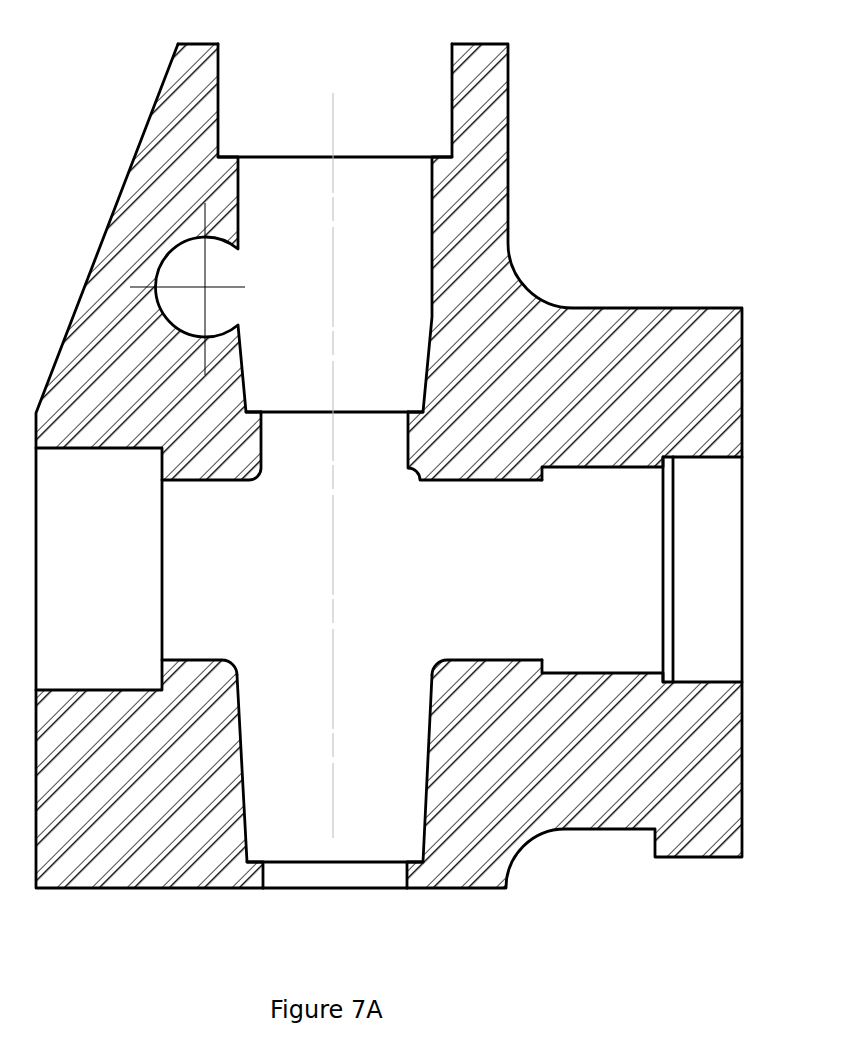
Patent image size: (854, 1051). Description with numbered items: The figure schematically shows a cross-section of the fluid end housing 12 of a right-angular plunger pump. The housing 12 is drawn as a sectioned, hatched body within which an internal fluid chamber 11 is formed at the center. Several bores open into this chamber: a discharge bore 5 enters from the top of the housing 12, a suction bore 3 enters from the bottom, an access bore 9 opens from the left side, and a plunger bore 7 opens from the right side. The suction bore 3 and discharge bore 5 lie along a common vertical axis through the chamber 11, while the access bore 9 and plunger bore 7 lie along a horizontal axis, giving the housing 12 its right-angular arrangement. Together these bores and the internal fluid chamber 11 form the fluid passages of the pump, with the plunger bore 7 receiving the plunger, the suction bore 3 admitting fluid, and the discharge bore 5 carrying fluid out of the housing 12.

The suction bore 3 is at (365, 741).
The discharge bore 5 is at (358, 226).
The plunger bore 7 is at (591, 569).
The access bore 9 is at (80, 557).
The internal fluid chamber 11 is at (376, 579).
The fluid end housing 12 is at (507, 100).